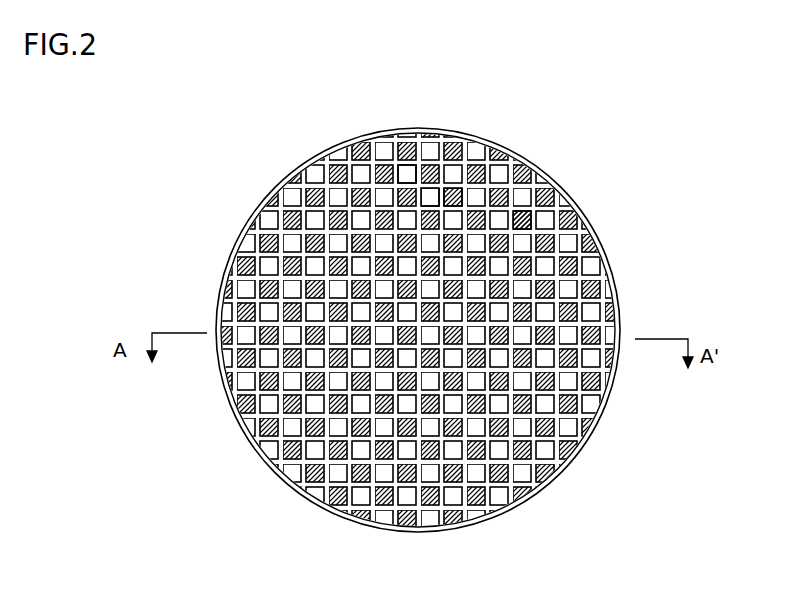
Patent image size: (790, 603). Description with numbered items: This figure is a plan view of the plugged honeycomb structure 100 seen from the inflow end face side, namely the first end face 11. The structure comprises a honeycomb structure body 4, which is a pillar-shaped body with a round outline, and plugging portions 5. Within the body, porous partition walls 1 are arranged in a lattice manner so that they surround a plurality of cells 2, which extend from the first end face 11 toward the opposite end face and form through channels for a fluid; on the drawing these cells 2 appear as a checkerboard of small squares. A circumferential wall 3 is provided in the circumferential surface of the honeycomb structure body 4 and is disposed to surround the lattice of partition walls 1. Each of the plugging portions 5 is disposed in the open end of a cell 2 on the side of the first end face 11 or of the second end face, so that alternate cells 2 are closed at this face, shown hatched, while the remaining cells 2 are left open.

The plugged honeycomb structure 100 is at (660, 54).
The partition walls 1 is at (443, 187).
The cells 2 is at (408, 178).
The circumferential wall 3 is at (586, 240).
The honeycomb structure body 4 is at (613, 400).
The plugging portions 5 is at (523, 223).
The first end face 11 is at (270, 186).